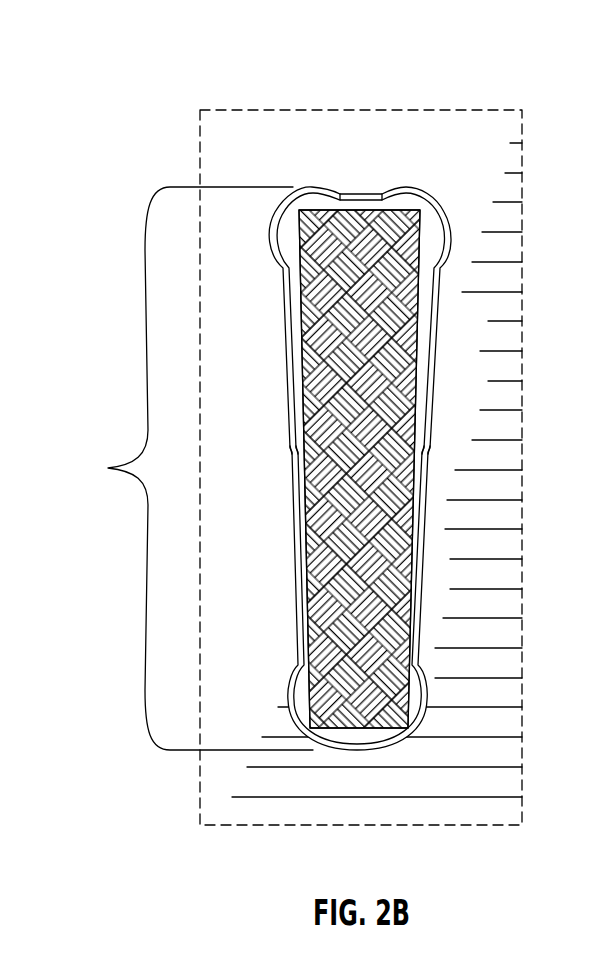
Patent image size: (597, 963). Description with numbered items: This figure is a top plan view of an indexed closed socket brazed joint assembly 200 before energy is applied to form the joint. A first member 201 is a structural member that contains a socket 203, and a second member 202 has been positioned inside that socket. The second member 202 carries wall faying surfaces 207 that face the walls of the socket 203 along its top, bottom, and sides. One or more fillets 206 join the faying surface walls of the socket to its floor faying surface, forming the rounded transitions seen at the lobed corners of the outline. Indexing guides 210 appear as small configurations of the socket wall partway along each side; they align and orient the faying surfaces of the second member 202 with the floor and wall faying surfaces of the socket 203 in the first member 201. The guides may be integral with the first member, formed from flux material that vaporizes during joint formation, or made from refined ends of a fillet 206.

The indexed closed socket brazed joint assembly 200 is at (462, 57).
The first member 201 is at (213, 120).
The second member 202 is at (405, 212).
The socket 203 is at (108, 468).
The fillet 206 is at (440, 303).
The wall faying surface 207 is at (350, 198).
The indexing guide 210 is at (293, 450).